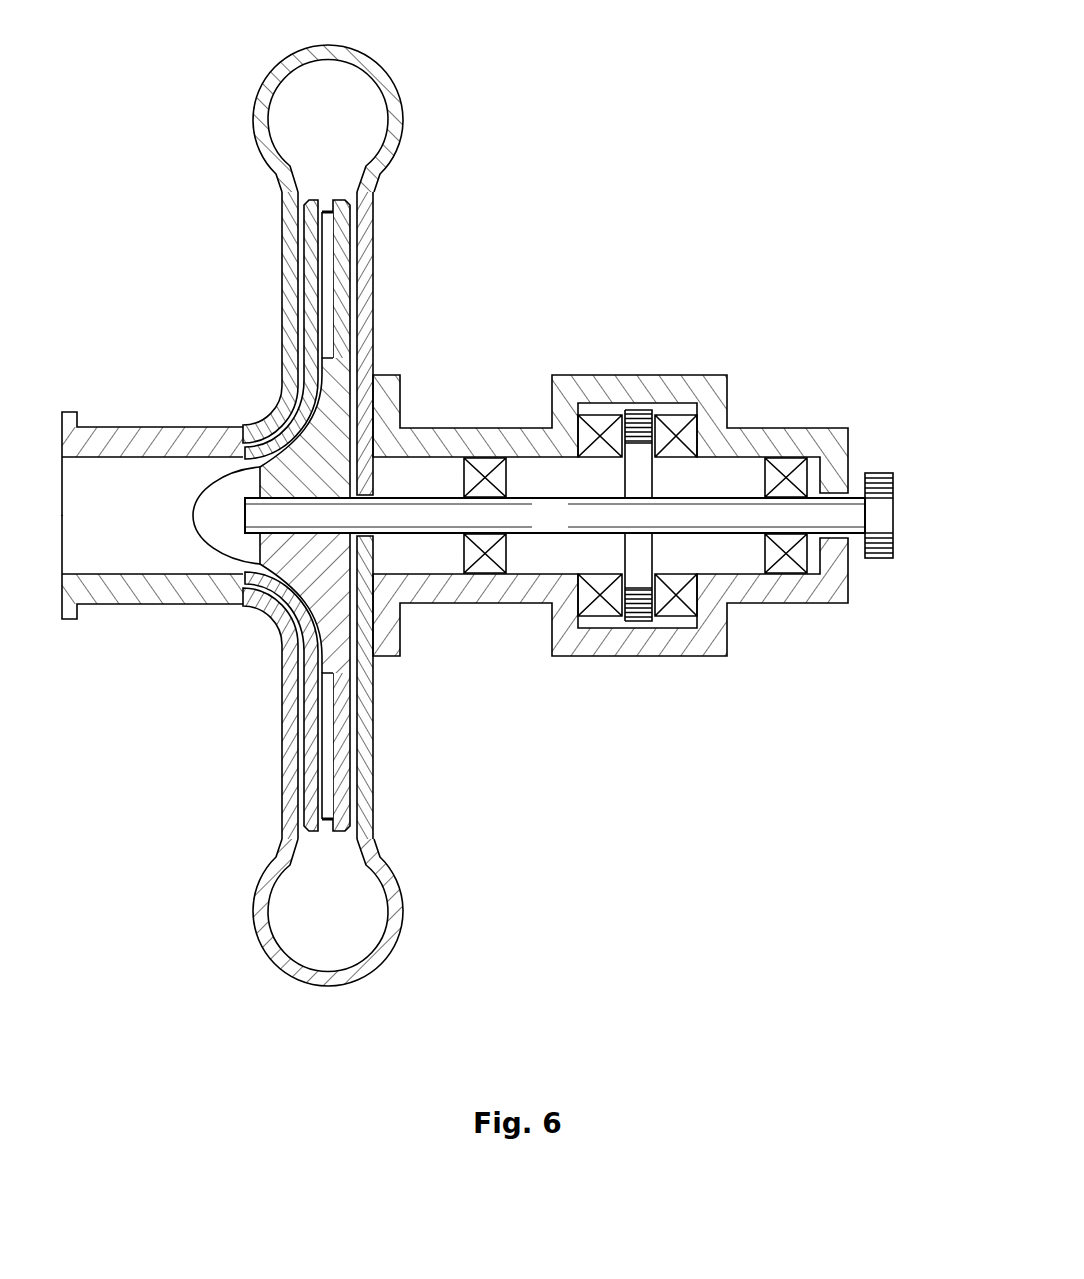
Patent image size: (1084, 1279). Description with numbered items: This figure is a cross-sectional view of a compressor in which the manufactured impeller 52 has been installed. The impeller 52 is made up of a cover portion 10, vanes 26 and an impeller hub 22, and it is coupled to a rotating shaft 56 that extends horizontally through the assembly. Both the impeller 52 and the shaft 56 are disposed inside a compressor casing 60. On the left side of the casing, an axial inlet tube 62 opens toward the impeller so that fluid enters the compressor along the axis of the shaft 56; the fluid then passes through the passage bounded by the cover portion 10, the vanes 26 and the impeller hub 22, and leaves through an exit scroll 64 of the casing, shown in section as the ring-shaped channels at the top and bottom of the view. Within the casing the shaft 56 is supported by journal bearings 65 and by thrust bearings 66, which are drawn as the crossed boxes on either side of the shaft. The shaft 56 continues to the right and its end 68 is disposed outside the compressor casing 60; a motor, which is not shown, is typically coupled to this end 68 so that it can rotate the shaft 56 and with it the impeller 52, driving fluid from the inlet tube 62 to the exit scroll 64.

The cover portion 10 is at (304, 300).
The impeller hub 22 is at (350, 367).
The vanes 26 is at (326, 210).
The impeller 52 is at (347, 255).
The rotating shaft 56 is at (562, 527).
The compressor casing 60 is at (282, 245).
The axial inlet tube 62 is at (160, 427).
The exit scroll 64 is at (362, 62).
The journal bearings 65 is at (463, 478).
The thrust bearings 66 is at (600, 415).
The end of shaft 68 is at (893, 497).